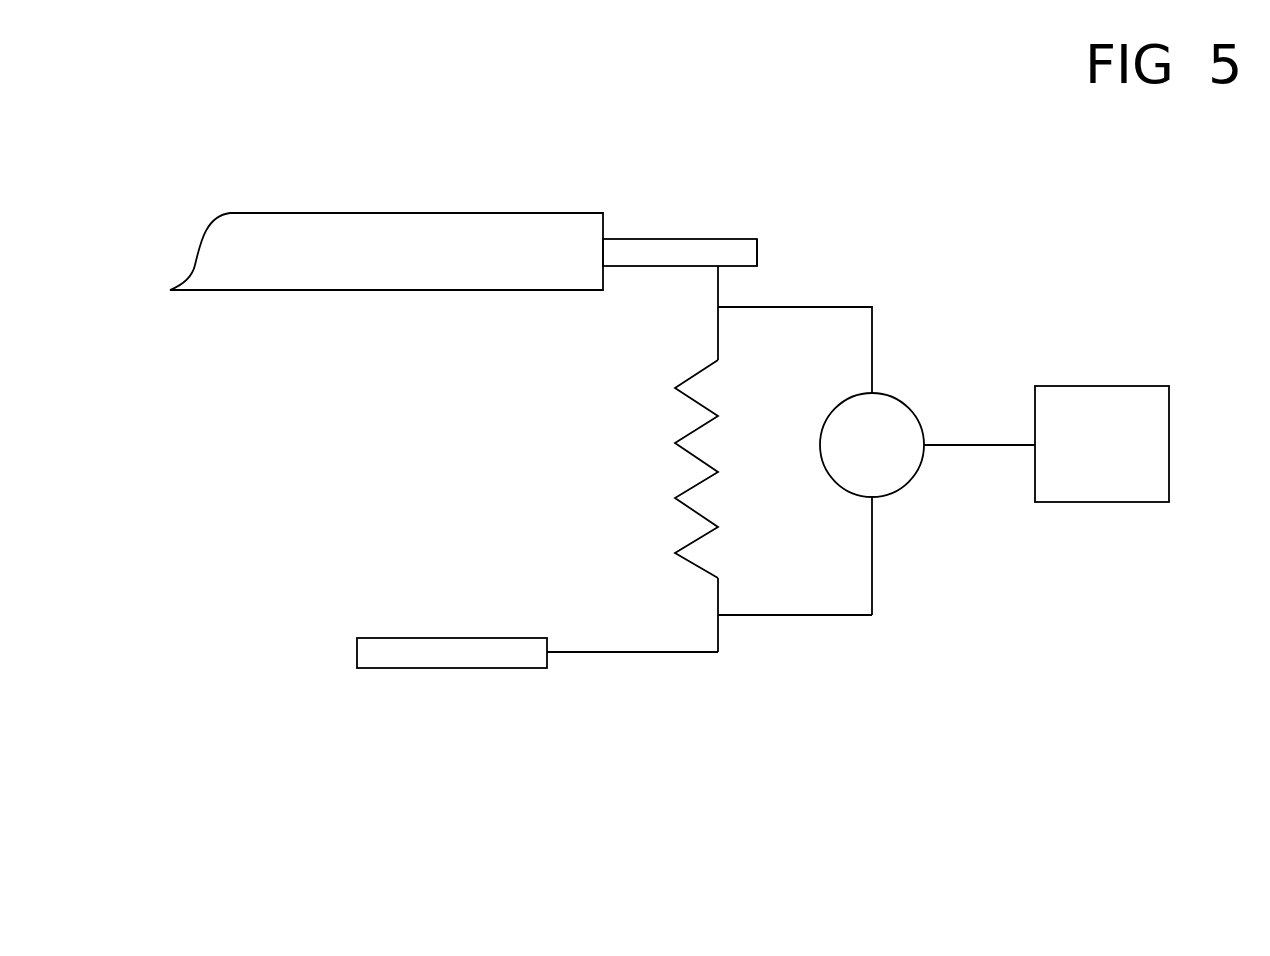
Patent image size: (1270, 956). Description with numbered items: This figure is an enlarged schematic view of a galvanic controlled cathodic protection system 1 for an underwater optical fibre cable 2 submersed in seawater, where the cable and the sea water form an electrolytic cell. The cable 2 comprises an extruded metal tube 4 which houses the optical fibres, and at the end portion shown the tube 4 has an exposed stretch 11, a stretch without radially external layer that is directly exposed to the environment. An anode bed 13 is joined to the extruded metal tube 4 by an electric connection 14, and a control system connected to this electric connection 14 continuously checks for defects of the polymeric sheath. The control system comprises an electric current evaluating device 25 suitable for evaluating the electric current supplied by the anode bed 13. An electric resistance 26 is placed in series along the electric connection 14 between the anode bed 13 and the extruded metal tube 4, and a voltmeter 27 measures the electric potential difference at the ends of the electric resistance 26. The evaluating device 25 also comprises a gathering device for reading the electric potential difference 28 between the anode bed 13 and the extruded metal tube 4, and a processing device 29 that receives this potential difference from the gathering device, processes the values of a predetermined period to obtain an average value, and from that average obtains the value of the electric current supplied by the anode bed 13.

The apparatus 1 is at (717, 173).
The underwater optical fibre cable 2 is at (322, 250).
The extruded metal tube 4 is at (643, 248).
The exposed stretch 11 is at (727, 250).
The anode bed 13 is at (405, 656).
The electric connection 14 is at (615, 652).
The electric current evaluating device 25 is at (918, 385).
The electric resistance 26 is at (695, 482).
The voltmeter 27 is at (909, 482).
The gathering device for reading the electric potential difference 28 is at (800, 632).
The processing device 29 is at (1118, 475).